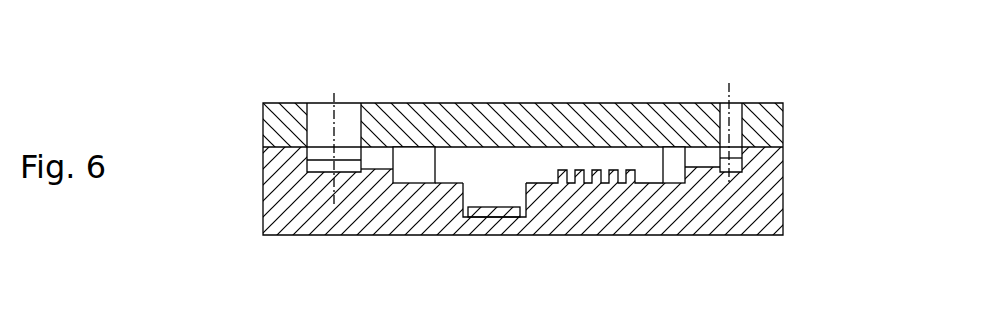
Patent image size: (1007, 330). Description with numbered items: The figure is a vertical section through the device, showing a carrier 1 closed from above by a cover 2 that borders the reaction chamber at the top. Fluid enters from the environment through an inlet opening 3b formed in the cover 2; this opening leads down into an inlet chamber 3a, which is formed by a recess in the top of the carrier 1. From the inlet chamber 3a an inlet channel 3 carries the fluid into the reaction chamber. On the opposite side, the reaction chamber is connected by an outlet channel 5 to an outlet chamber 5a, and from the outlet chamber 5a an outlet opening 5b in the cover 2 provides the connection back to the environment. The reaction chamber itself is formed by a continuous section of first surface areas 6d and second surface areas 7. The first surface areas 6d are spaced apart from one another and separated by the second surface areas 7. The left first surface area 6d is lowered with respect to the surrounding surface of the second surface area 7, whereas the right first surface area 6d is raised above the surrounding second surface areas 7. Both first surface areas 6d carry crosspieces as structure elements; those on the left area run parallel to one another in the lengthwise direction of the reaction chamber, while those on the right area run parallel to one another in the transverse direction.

The carrier 1 is at (787, 200).
The cover 2 is at (790, 110).
The inlet channel 3 is at (378, 163).
The inlet chamber 3a is at (318, 161).
The inlet opening 3b is at (322, 133).
The outlet channel 5 is at (698, 158).
The outlet chamber 5a is at (733, 158).
The outlet opening 5b is at (738, 112).
The first surface area 6d is at (583, 170).
The second surface area 7 is at (415, 168).